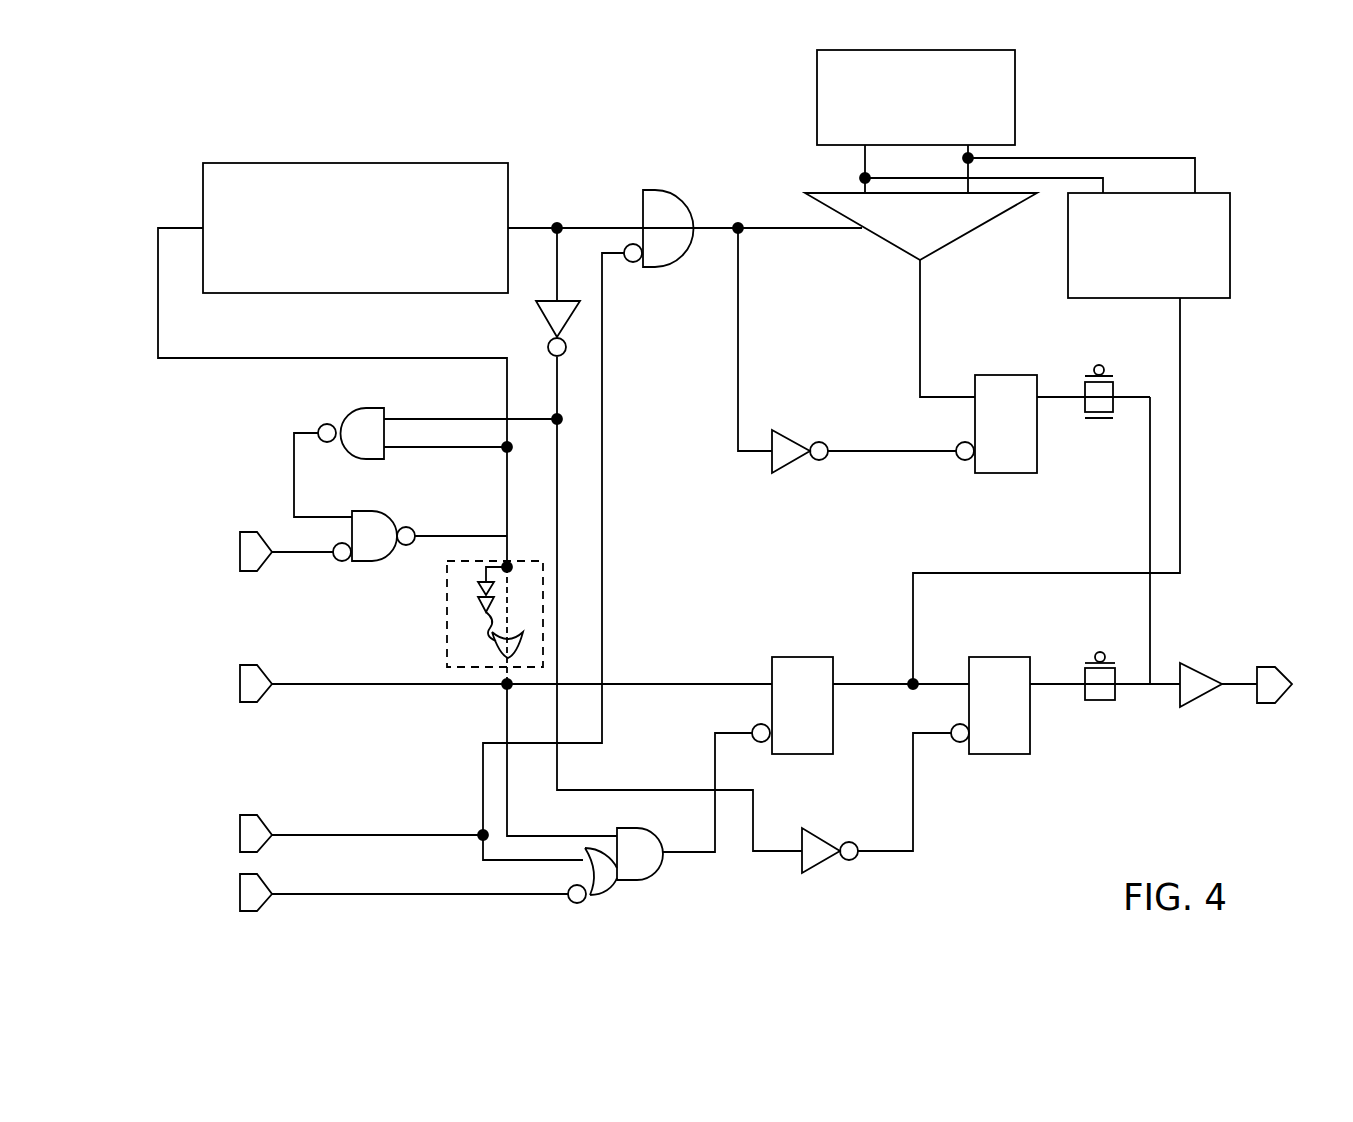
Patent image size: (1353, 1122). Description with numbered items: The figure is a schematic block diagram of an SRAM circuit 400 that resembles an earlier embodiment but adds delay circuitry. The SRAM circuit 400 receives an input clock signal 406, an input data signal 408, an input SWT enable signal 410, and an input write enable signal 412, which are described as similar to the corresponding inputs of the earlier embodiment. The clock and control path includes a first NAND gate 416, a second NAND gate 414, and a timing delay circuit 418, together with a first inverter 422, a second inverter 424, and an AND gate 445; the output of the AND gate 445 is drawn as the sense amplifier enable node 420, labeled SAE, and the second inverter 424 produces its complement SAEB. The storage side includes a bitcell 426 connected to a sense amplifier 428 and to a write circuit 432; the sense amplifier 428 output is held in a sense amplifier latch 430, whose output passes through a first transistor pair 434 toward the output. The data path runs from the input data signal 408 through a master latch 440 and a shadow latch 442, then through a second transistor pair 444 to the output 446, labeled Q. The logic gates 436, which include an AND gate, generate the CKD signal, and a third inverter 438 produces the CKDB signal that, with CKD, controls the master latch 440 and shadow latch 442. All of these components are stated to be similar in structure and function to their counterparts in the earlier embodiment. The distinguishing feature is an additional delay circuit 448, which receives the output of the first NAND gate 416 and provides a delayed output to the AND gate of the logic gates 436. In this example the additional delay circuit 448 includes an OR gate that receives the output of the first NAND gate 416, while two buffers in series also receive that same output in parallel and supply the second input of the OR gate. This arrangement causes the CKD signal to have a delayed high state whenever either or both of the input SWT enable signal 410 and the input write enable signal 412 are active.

The SRAM circuit 400 is at (753, 500).
The input clock signal 406 is at (219, 532).
The input data signal 408 is at (219, 663).
The input SWT enable signal 410 is at (219, 814).
The input write enable signal 412 is at (219, 911).
The second NAND gate 414 is at (318, 424).
The first NAND gate 416 is at (388, 518).
The timing delay circuit 418 is at (355, 209).
The sense amplifier enable node SAE 420 is at (789, 302).
The first inverter 422 is at (610, 328).
The second inverter 424 is at (799, 480).
The bitcell 426 is at (968, 97).
The sense amplifier 428 is at (924, 230).
The sense amplifier latch 430 is at (996, 396).
The write circuit 432 is at (1198, 245).
The first transistor pair 434 is at (1112, 368).
The logic gates 436 is at (615, 889).
The third inverter 438 is at (830, 879).
The master latch 440 is at (792, 676).
The shadow latch 442 is at (990, 676).
The second transistor pair 444 is at (1107, 649).
The AND gate 445 is at (659, 190).
The output Q 446 is at (1303, 709).
The additional delay circuit 448 is at (454, 622).